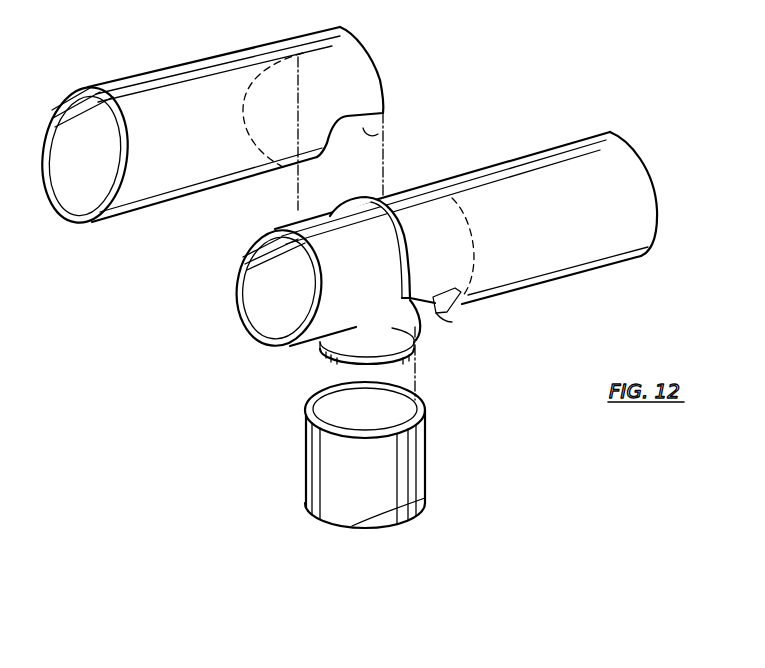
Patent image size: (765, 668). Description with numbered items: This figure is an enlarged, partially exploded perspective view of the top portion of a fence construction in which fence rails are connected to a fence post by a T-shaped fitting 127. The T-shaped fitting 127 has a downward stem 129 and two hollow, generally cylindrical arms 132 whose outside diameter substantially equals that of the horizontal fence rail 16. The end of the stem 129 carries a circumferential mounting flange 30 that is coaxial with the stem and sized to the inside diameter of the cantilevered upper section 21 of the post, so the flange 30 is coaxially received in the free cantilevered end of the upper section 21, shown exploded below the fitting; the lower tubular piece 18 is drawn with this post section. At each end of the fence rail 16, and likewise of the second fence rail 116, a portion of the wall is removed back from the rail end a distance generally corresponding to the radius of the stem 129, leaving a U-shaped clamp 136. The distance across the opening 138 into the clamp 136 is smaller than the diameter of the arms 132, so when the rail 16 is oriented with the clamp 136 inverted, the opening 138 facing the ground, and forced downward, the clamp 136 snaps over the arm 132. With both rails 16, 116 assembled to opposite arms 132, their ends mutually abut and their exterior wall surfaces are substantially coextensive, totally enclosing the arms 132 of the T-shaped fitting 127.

The fence rail 16 is at (178, 64).
The fence rail 116 is at (582, 138).
The arm of the T-shaped fitting 132 is at (283, 228).
The U-shaped clamp 136 is at (365, 53).
The opening 138 is at (364, 128).
The T-shaped fitting 127 is at (278, 351).
The stem 129 is at (432, 313).
The circumferential mounting flange 30 is at (360, 362).
The cylindrical cup 18 is at (430, 488).
The cantilevered upper section 21 is at (428, 445).